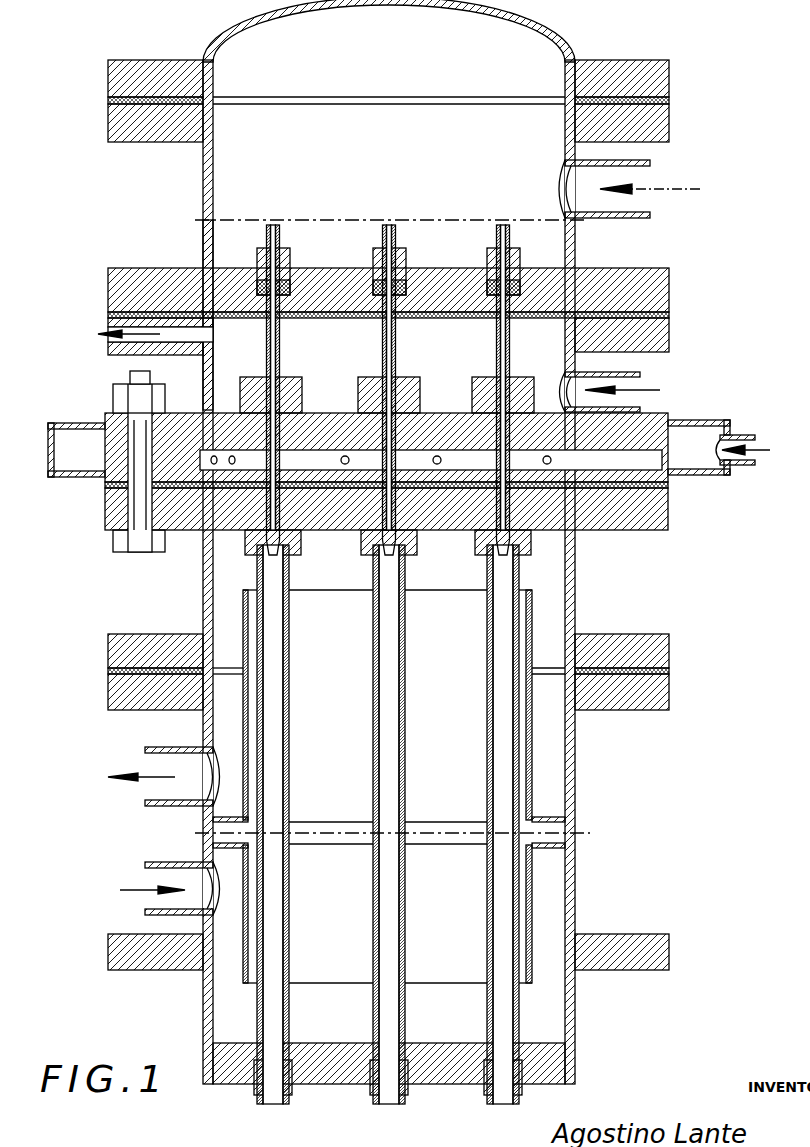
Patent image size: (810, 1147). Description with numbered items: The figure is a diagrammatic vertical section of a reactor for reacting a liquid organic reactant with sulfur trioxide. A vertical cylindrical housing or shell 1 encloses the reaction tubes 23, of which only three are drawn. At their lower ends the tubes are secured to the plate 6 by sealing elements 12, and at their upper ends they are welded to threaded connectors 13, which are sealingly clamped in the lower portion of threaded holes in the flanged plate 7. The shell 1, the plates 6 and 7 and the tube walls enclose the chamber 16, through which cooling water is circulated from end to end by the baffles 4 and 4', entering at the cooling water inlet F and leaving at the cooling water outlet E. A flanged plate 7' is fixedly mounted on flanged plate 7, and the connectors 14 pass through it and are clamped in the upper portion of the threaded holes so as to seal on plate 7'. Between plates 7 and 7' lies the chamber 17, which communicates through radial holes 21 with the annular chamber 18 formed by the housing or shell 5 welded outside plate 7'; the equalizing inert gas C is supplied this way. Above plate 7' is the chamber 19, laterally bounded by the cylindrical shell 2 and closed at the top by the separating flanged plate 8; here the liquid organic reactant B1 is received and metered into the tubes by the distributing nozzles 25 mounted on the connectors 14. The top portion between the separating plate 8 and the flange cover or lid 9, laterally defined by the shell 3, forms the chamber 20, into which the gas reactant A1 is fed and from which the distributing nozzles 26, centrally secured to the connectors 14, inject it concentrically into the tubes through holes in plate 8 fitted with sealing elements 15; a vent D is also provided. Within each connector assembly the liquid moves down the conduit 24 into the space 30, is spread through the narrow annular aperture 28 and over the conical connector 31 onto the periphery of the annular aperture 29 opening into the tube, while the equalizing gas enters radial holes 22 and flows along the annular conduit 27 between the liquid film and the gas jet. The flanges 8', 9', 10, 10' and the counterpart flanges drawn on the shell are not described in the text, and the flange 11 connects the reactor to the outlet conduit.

The cylindrical housing or shell 1 is at (575, 790).
The cylindrical housing or shell 2 is at (203, 378).
The cylindrical shell or housing 3 is at (203, 185).
The baffle 4 is at (544, 824).
The baffle 4' is at (537, 775).
The housing or shell 5 is at (80, 428).
The plate 6 is at (463, 1050).
The flanged plate 7 is at (386, 527).
The flanged plate 7' is at (386, 416).
The separating flanged plate 8 is at (388, 278).
The counter flange 8' is at (405, 326).
The flange cover or lid 9 is at (388, 66).
The upper counter flange 9' is at (388, 142).
The lower flange 10 is at (175, 657).
The lower counter flange 10' is at (600, 692).
The flange 11 is at (628, 940).
The sealing elements 12 is at (368, 1088).
The threaded connectors 13 is at (300, 550).
The connectors 14 is at (292, 395).
The sealing elements 15 is at (288, 258).
The chamber 16 is at (322, 836).
The chamber 17 is at (452, 452).
The annular chamber 18 is at (75, 470).
The chamber 19 is at (439, 354).
The chamber 20 is at (412, 186).
The radial holes 21 is at (345, 466).
The radial holes 22 is at (295, 440).
The reaction tubes 23 is at (405, 800).
The conduit 24 is at (372, 398).
The distributing nozzles 25 is at (480, 398).
The distributing nozzles 26 is at (406, 232).
The annular conduit 27 is at (215, 525).
The annular aperture 28 is at (210, 560).
The annular aperture 29 is at (257, 565).
The space 30 is at (420, 540).
The conical connector 31 is at (468, 552).
The SO3 plus inert diluent gas A1 is at (672, 186).
The liquid organic reactant B1 is at (660, 390).
The equalizing inert gas C is at (766, 450).
The vent D is at (104, 338).
The cooling water outlet E is at (160, 780).
The cooling water inlet F is at (122, 890).